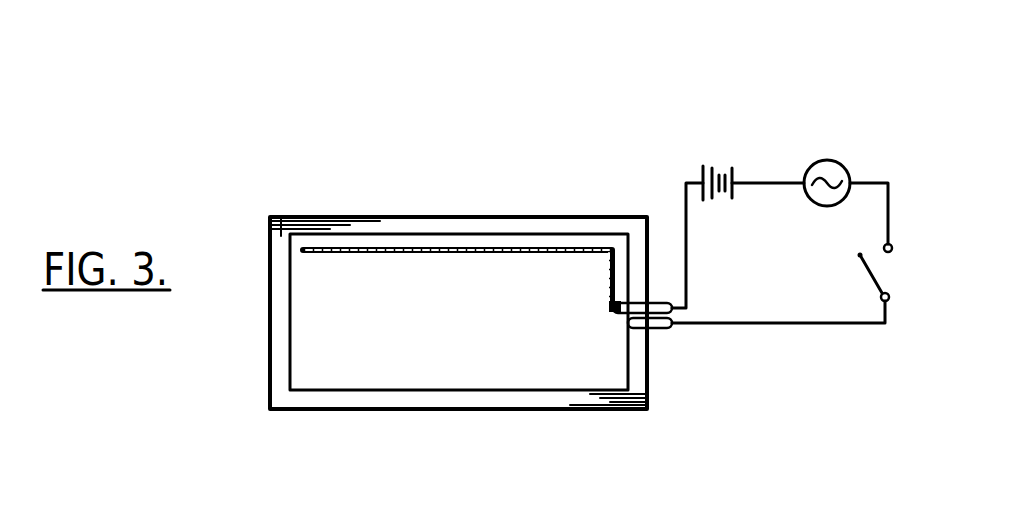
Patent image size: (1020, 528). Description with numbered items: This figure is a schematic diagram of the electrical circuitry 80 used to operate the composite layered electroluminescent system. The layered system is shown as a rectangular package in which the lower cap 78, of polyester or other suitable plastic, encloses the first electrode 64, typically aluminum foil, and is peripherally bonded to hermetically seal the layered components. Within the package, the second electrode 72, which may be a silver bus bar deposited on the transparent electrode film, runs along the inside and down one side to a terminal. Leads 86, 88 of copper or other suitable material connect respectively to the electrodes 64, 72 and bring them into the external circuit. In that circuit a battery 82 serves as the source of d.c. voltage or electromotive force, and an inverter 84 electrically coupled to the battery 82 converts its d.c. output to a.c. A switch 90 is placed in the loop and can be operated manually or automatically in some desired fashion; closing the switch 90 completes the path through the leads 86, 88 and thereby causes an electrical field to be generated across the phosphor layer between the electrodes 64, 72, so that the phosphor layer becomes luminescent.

The schematic electrical circuitry 80 is at (484, 196).
The lower cap 78 is at (440, 410).
The first electrode 64 is at (628, 372).
The second electrode 72 is at (492, 254).
The lead 88 is at (686, 241).
The battery 82 is at (711, 165).
The inverter 84 is at (826, 160).
The switch 90 is at (858, 256).
The lead 86 is at (808, 324).